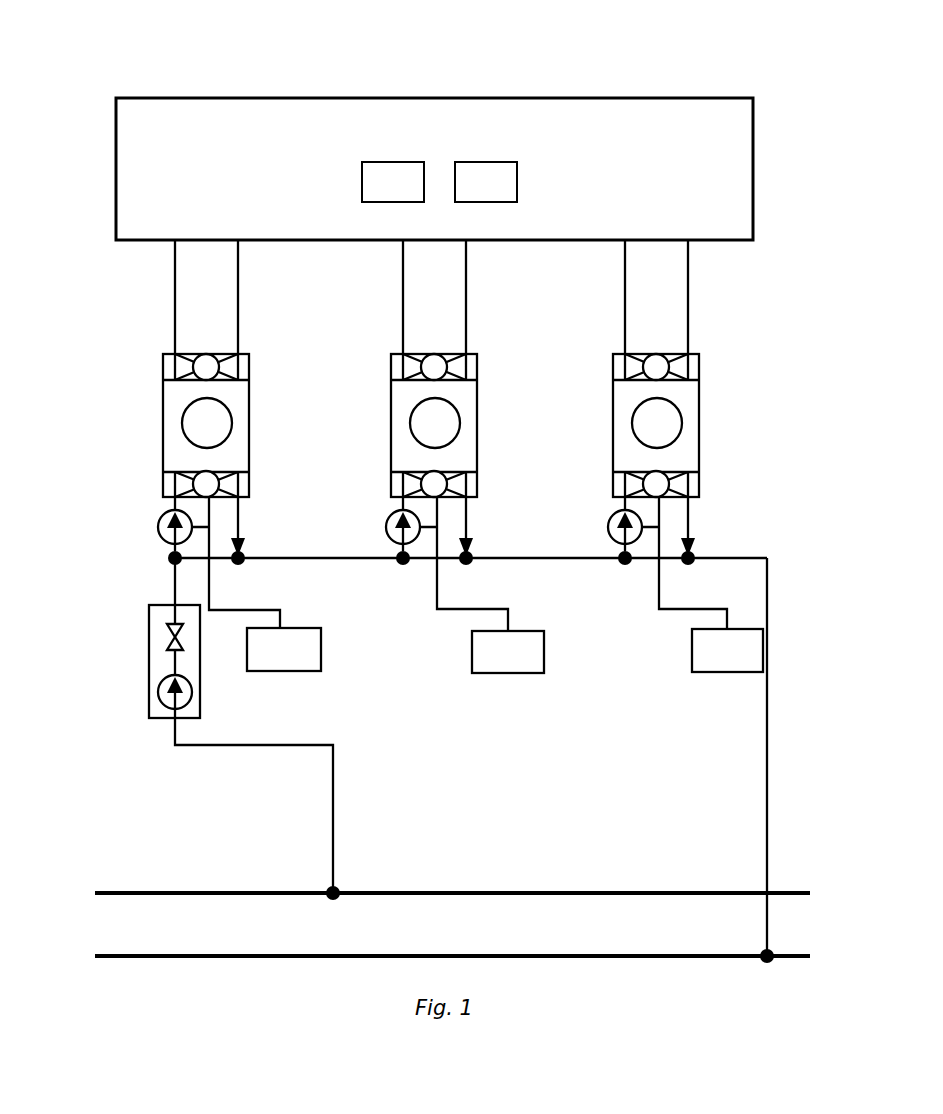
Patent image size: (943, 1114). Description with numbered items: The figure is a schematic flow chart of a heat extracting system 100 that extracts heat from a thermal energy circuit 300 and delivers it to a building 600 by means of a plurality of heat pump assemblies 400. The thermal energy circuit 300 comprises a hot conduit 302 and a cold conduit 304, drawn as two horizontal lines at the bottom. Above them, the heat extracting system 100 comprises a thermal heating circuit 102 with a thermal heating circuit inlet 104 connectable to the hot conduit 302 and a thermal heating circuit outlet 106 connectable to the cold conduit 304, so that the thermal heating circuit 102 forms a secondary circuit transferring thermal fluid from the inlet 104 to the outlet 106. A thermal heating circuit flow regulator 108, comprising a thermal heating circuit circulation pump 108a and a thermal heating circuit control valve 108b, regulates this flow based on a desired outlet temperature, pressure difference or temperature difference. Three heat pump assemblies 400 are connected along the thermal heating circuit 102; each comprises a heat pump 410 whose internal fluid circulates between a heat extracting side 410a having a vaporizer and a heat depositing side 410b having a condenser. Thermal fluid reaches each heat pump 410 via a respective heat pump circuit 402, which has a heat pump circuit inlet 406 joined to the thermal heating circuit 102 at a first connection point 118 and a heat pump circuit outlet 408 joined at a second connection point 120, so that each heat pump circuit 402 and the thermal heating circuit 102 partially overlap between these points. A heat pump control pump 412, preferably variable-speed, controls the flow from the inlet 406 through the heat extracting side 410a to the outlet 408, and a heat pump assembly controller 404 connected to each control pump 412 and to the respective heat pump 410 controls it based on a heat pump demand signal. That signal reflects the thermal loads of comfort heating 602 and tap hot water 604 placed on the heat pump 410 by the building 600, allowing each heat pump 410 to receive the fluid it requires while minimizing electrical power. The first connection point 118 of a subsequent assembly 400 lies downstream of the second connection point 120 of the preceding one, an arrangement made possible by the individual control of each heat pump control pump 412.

The heat extracting system 100 is at (455, 764).
The thermal heating circuit 102 is at (280, 745).
The thermal heating circuit inlet 104 is at (333, 836).
The thermal heating circuit outlet 106 is at (767, 840).
The thermal heating circuit flow regulator 108 is at (129, 661).
The thermal heating circuit circulation pump 108a is at (160, 702).
The thermal heating circuit control valve 108b is at (160, 641).
The first connection point 118 is at (170, 560).
The second connection point 120 is at (246, 560).
The thermal energy circuit 300 is at (441, 909).
The hot conduit 302 is at (97, 892).
The cold conduit 304 is at (137, 957).
The heat pump assembly 400 is at (271, 366).
The heat pump circuit 402 is at (255, 514).
The heat pump assembly controller 404 is at (486, 585).
The heat pump circuit inlet 406 is at (172, 556).
The heat pump circuit outlet 408 is at (246, 542).
The heat pump 410 is at (249, 416).
The heat extracting side 410a is at (249, 479).
The heat depositing side 410b is at (163, 371).
The heat pump control pump 412 is at (158, 513).
The building 600 is at (424, 81).
The comfort heating 602 is at (393, 182).
The tap hot water 604 is at (486, 182).